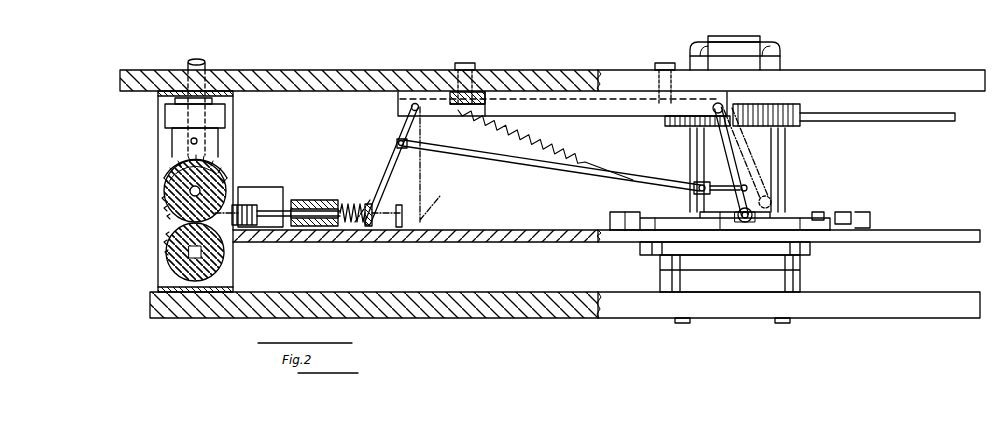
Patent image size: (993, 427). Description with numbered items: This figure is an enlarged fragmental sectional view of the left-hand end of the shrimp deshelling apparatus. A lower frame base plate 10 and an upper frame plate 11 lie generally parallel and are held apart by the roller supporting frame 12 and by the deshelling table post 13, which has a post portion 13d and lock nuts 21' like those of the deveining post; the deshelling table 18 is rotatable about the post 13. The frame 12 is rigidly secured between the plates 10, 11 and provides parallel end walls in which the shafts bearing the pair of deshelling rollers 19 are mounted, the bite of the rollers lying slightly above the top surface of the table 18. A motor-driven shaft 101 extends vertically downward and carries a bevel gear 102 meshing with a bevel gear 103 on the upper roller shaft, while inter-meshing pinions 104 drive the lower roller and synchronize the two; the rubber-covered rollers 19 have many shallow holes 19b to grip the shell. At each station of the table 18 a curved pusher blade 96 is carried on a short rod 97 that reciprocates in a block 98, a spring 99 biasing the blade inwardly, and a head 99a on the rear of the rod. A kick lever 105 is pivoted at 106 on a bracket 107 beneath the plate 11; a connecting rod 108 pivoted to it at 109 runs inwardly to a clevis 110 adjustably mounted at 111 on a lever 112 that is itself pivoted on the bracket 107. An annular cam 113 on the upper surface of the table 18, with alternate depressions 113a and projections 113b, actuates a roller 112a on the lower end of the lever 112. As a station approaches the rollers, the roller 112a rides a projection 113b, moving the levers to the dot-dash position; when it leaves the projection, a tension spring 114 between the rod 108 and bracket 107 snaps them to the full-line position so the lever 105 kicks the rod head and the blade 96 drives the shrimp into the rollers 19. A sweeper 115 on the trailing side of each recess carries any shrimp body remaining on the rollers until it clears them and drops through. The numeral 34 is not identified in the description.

The lower frame base plate 10 is at (535, 293).
The upper frame plate 11 is at (902, 73).
The roller supporting frame 12 is at (157, 118).
The deshelling table post 13 is at (786, 161).
The post portion 13d is at (738, 36).
The deshelling table 18 is at (936, 236).
The deshelling rollers 19 is at (165, 183).
The shallow holes 19b is at (165, 193).
The lock nuts 21' is at (712, 46).
The rod 34 is at (928, 121).
The pusher blade 96 is at (260, 205).
The rod 97 is at (283, 211).
The block 98 is at (305, 200).
The spring 99 is at (348, 206).
The spring seat 99a is at (369, 204).
The shaft 101 is at (206, 62).
The bevel gear 102 is at (172, 162).
The bevel gear 103 is at (175, 176).
The pinions 104 is at (178, 224).
The kick lever 105 is at (393, 176).
The pivot 106 is at (412, 110).
The bracket 107 is at (400, 98).
The connecting rod 108 is at (507, 166).
The pivot point 109 is at (404, 142).
The clevis 110 is at (700, 184).
The adjustable mounting 111 is at (748, 188).
The lever 112 is at (722, 160).
The roller 112a is at (748, 222).
The annular cam 113 is at (717, 104).
The depressions 113a is at (845, 212).
The projections 113b is at (820, 212).
The tension spring 114 is at (557, 158).
The pusher 115 is at (242, 187).